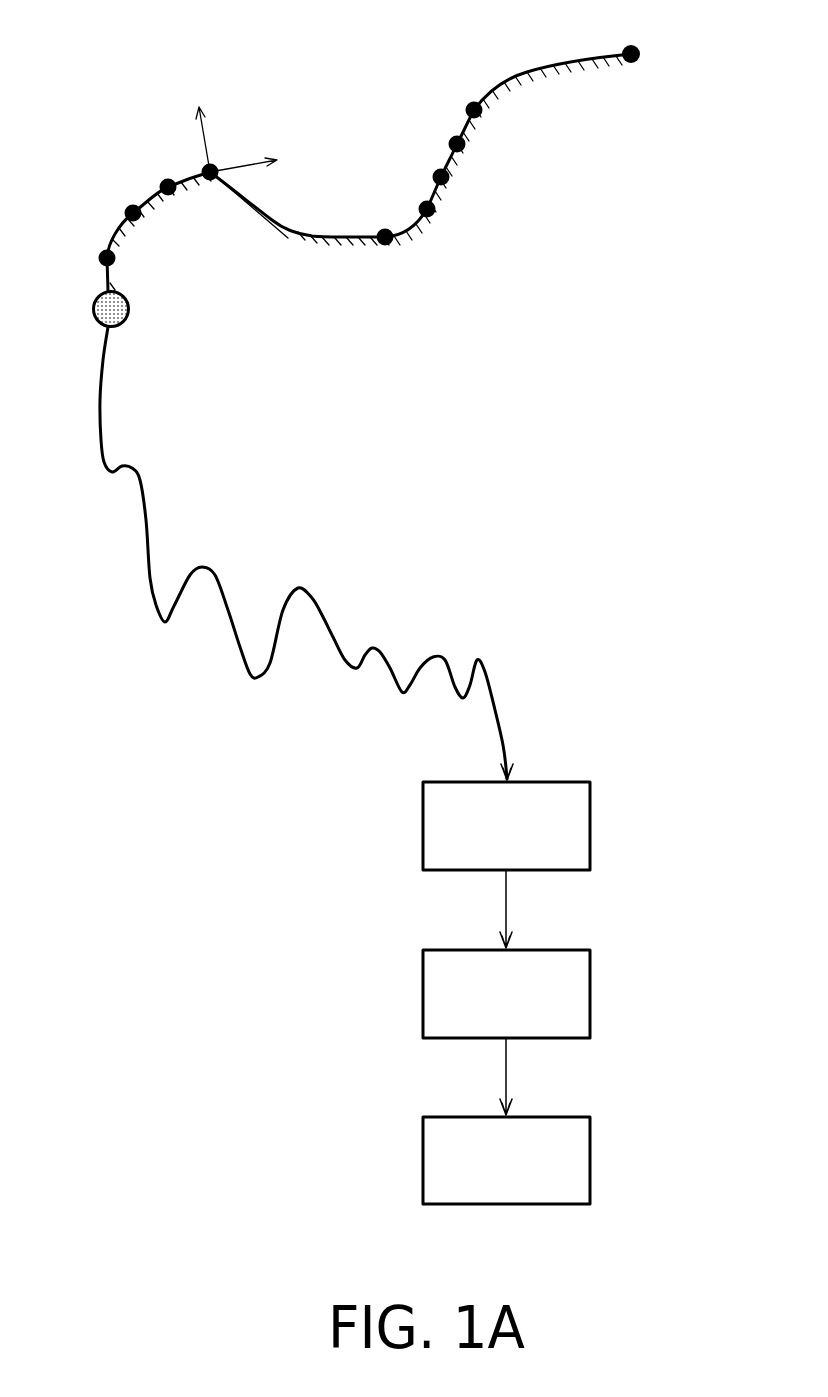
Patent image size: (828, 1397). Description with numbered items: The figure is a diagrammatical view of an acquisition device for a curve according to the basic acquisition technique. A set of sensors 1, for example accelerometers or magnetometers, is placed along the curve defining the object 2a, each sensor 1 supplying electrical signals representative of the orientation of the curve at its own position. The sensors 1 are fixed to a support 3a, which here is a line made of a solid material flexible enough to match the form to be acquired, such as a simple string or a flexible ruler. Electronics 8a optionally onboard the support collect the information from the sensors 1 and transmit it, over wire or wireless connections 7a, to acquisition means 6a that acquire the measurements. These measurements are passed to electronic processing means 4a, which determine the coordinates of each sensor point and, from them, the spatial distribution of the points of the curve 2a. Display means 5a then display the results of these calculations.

The sensors 1 is at (128, 213).
The curve defining the object 2a is at (573, 68).
The support 3a is at (523, 75).
The onboard electronics 8a is at (129, 309).
The wire or wireless connections 7a is at (150, 518).
The acquisition means 6a is at (579, 833).
The electronic processing means 4a is at (579, 1001).
The display means 5a is at (579, 1168).